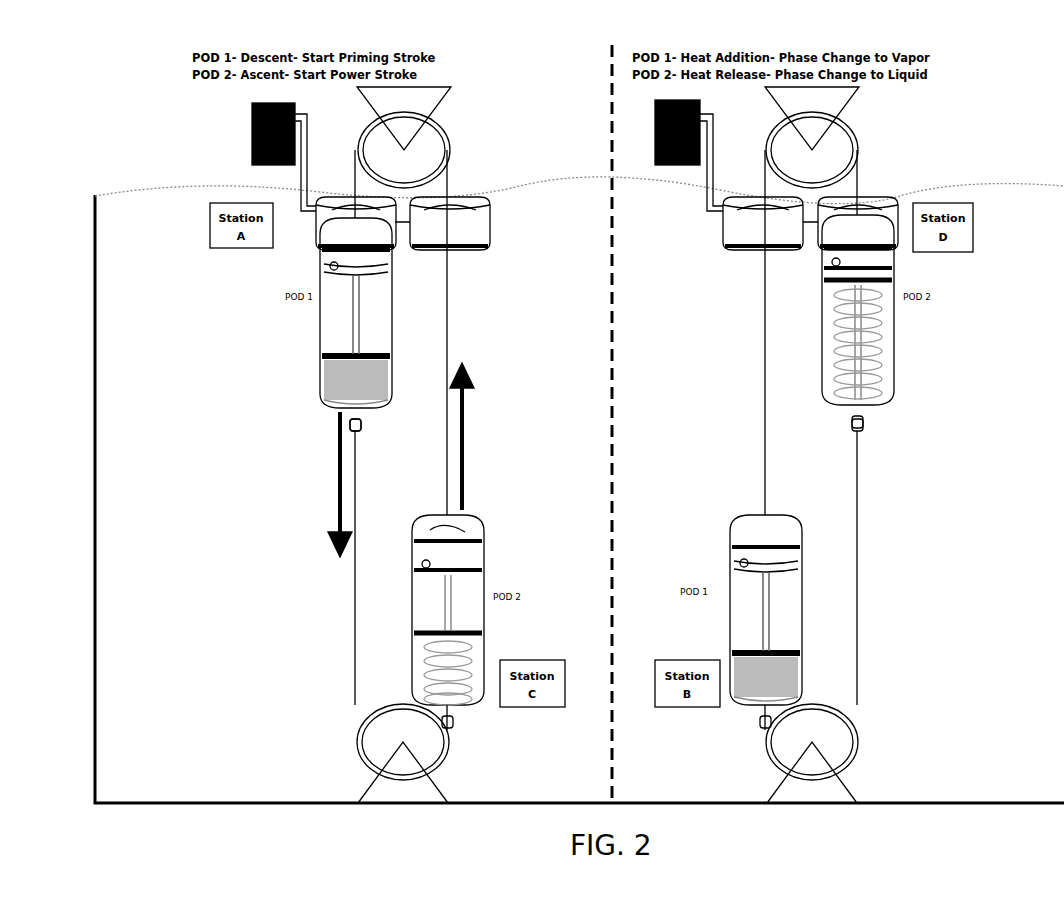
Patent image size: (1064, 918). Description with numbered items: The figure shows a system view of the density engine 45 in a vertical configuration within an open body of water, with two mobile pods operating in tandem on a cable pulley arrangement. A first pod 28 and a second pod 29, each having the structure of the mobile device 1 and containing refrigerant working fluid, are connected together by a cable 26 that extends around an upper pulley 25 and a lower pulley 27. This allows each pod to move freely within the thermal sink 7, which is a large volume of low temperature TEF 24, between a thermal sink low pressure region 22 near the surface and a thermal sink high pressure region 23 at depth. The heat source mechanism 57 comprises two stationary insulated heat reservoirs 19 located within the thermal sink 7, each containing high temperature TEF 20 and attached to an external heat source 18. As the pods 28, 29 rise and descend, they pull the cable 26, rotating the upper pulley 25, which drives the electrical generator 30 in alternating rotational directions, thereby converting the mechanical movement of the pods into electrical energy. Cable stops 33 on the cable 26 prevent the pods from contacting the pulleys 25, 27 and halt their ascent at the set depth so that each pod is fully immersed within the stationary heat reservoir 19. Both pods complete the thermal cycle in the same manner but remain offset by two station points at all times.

The mobile device 1 is at (394, 340).
The thermal sink 7 is at (590, 458).
The external heat source 18 is at (252, 118).
The stationary insulated heat reservoir 19 is at (308, 220).
The high temperature TEF 20 is at (328, 226).
The thermal sink low pressure region 22 is at (588, 231).
The thermal sink high pressure region 23 is at (588, 688).
The low temperature TEF 24 is at (466, 528).
The upper pulley 25 is at (361, 184).
The cable 26 is at (350, 618).
The lower pulley 27 is at (367, 706).
The first pod 28 is at (318, 340).
The second pod 29 is at (488, 630).
The electrical generator 30 is at (452, 124).
The cable stop 33 is at (364, 428).
The density engine 45 is at (157, 128).
The heat source mechanism 57 is at (606, 223).